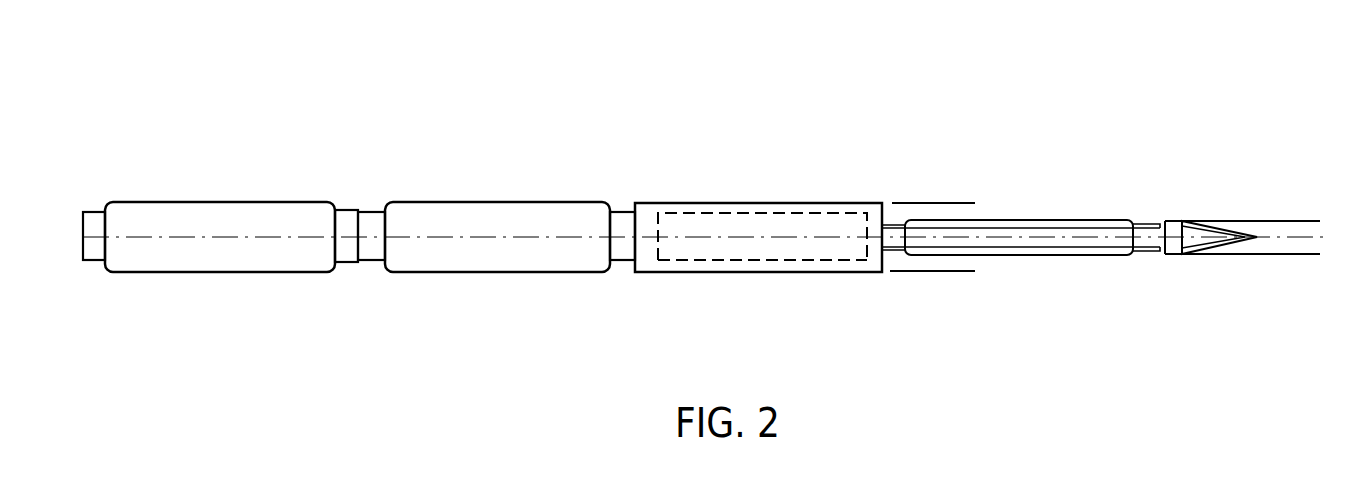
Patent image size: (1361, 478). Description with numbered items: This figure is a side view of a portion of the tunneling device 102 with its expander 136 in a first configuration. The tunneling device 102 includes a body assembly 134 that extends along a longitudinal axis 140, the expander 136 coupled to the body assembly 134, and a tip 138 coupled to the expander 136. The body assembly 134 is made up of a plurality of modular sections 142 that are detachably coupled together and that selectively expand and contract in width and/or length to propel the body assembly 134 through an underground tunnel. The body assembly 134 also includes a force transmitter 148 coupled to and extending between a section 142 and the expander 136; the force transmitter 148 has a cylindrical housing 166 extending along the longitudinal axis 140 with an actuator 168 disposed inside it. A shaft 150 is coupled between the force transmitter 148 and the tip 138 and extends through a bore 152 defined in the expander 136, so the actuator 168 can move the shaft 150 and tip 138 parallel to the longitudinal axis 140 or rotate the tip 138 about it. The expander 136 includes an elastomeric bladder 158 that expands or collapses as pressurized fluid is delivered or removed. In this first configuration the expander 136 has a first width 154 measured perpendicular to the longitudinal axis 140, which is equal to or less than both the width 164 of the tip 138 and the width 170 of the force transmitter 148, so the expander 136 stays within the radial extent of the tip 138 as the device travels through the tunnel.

The tunneling device 102 is at (244, 74).
The body assembly 134 is at (294, 276).
The longitudinal axis 140 is at (138, 208).
The sections 142 is at (420, 200).
The force transmitter 148 is at (700, 276).
The housing 166 is at (803, 203).
The actuator 168 is at (827, 260).
The bore 152 is at (928, 228).
The bladder 158 is at (1045, 221).
The shaft 150 is at (1045, 255).
The width of force transmitter 170 is at (963, 271).
The first width 154 is at (1149, 187).
The expander 136 is at (1104, 196).
The tip 138 is at (1198, 199).
The width of tip 164 is at (1284, 254).